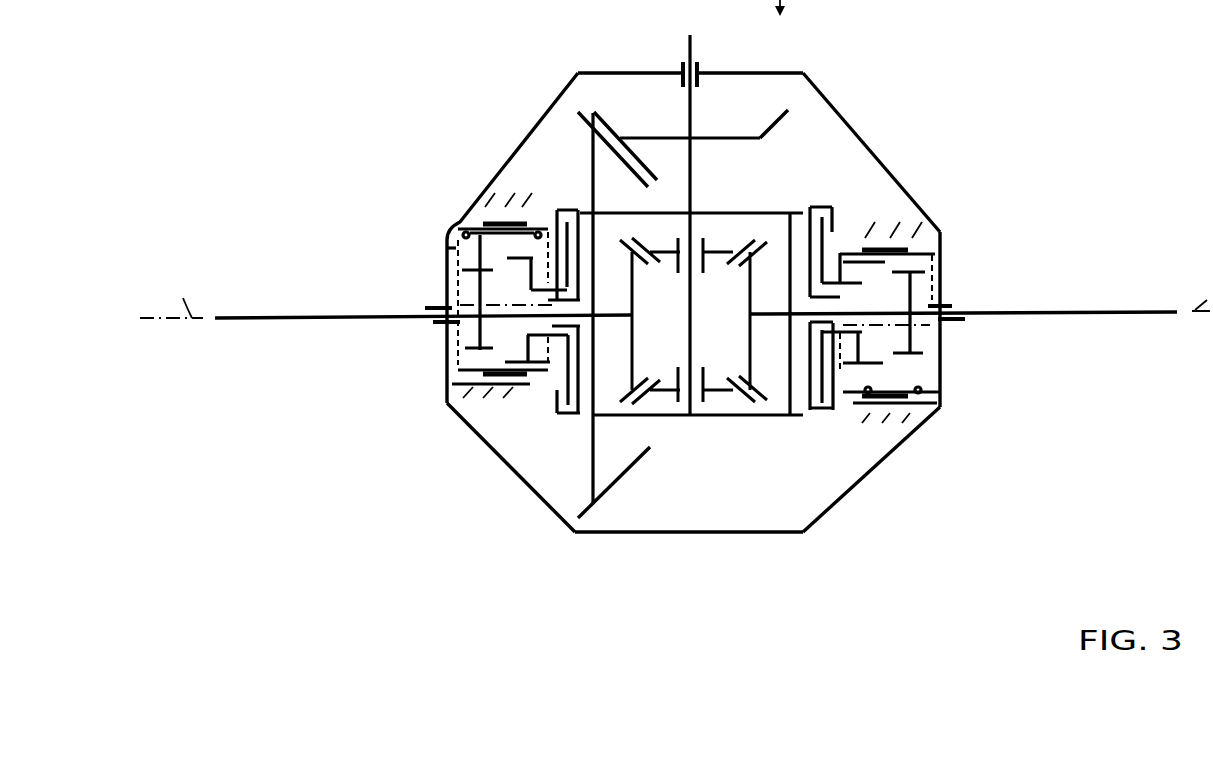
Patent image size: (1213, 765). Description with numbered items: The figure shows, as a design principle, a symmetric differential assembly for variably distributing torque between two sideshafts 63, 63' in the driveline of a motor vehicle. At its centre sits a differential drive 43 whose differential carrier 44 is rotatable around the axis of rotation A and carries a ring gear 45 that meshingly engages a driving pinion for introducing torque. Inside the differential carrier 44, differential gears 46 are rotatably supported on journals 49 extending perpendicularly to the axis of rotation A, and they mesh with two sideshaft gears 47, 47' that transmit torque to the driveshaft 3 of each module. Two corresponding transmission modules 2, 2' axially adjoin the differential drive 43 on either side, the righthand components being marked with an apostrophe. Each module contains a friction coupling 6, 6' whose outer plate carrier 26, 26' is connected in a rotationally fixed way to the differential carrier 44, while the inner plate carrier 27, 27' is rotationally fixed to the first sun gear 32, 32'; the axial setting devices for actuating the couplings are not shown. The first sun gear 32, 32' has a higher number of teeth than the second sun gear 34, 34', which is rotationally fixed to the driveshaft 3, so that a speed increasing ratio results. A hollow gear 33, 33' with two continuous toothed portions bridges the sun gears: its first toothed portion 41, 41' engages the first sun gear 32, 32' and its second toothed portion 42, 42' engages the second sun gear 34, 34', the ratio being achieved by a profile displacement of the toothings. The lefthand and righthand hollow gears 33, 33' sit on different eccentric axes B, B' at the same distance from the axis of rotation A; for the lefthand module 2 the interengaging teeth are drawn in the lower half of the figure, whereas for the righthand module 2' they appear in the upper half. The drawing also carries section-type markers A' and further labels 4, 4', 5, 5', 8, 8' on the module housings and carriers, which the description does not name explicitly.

The transmission module 2 is at (512, 156).
The transmission module 2' is at (871, 152).
The driveshaft 3 is at (497, 305).
The clutch carrier 4 is at (586, 262).
The clutch carrier 4' is at (780, 340).
The housing wall 5 is at (511, 467).
The housing wall 5' is at (900, 351).
The friction coupling 6 is at (616, 109).
The friction coupling 6' is at (862, 142).
The clutch housing 8 is at (494, 352).
The clutch housing 8' is at (900, 287).
The outer plate carrier 26 is at (566, 399).
The outer plate carrier 26' is at (825, 222).
The inner plate carrier 27 is at (536, 399).
The inner plate carrier 27' is at (824, 397).
The first sun gear 32 is at (508, 204).
The first sun gear 32' is at (843, 438).
The hollow gear 33 is at (465, 253).
The hollow gear 33' is at (908, 282).
The second sun gear 34 is at (461, 283).
The second sun gear 34' is at (921, 406).
The first toothed portion 41 is at (563, 223).
The first toothed portion 41' is at (874, 457).
The second toothed portion 42 is at (455, 261).
The second toothed portion 42' is at (929, 370).
The differential drive 43 is at (690, 455).
The differential carrier 44 is at (667, 213).
The ring gear 45 is at (612, 482).
The differential gears 46 is at (718, 244).
The sideshaft gear 47 is at (650, 321).
The sideshaft gear 47' is at (747, 320).
The journals 49 is at (700, 227).
The sideshaft 63 is at (386, 285).
The sideshaft 63' is at (963, 285).
The axis of rotation A is at (179, 293).
The axis A' is at (1200, 286).
The eccentric axis B is at (431, 283).
The eccentric axis B' is at (963, 334).